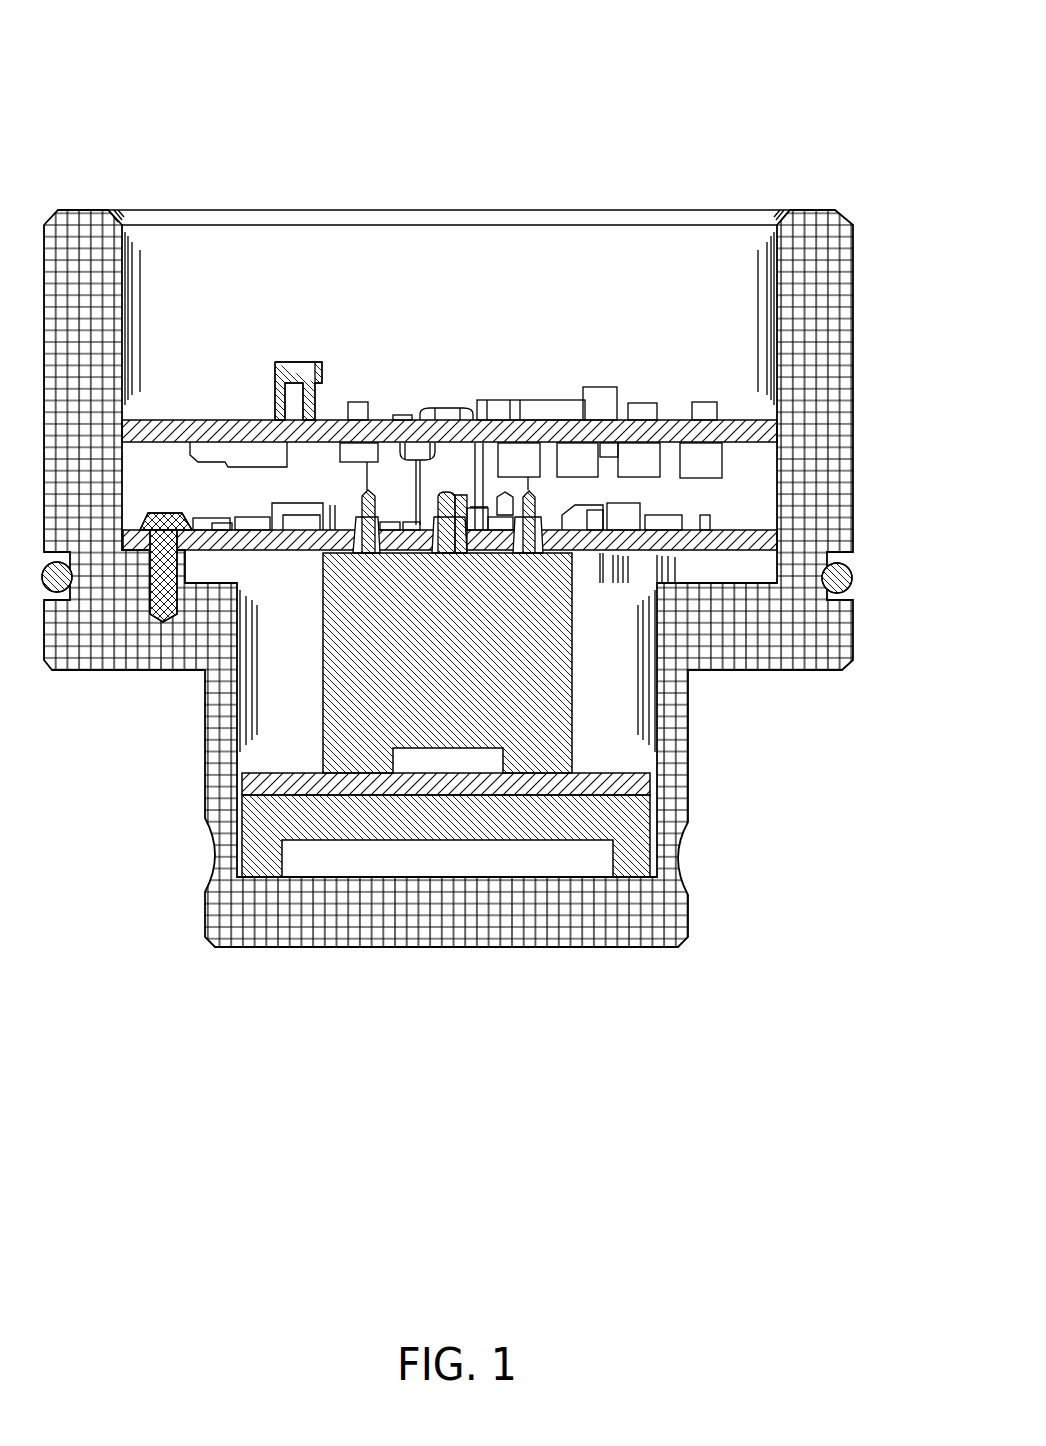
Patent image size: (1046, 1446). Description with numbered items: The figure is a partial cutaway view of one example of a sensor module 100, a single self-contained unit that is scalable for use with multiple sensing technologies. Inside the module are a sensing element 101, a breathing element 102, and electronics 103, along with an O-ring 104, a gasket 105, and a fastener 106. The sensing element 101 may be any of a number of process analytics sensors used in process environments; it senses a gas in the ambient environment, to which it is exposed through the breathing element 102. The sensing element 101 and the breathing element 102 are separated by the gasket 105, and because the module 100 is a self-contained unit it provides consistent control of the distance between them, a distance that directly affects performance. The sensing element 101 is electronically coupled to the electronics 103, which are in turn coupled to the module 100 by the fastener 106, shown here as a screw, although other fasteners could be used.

The sensor module 100 is at (858, 90).
The sensing element 101 is at (505, 632).
The breathing element 102 is at (622, 852).
The electronics 103 is at (757, 541).
The O-ring 104 is at (44, 594).
The gasket 105 is at (515, 797).
The fastener 106 is at (150, 582).